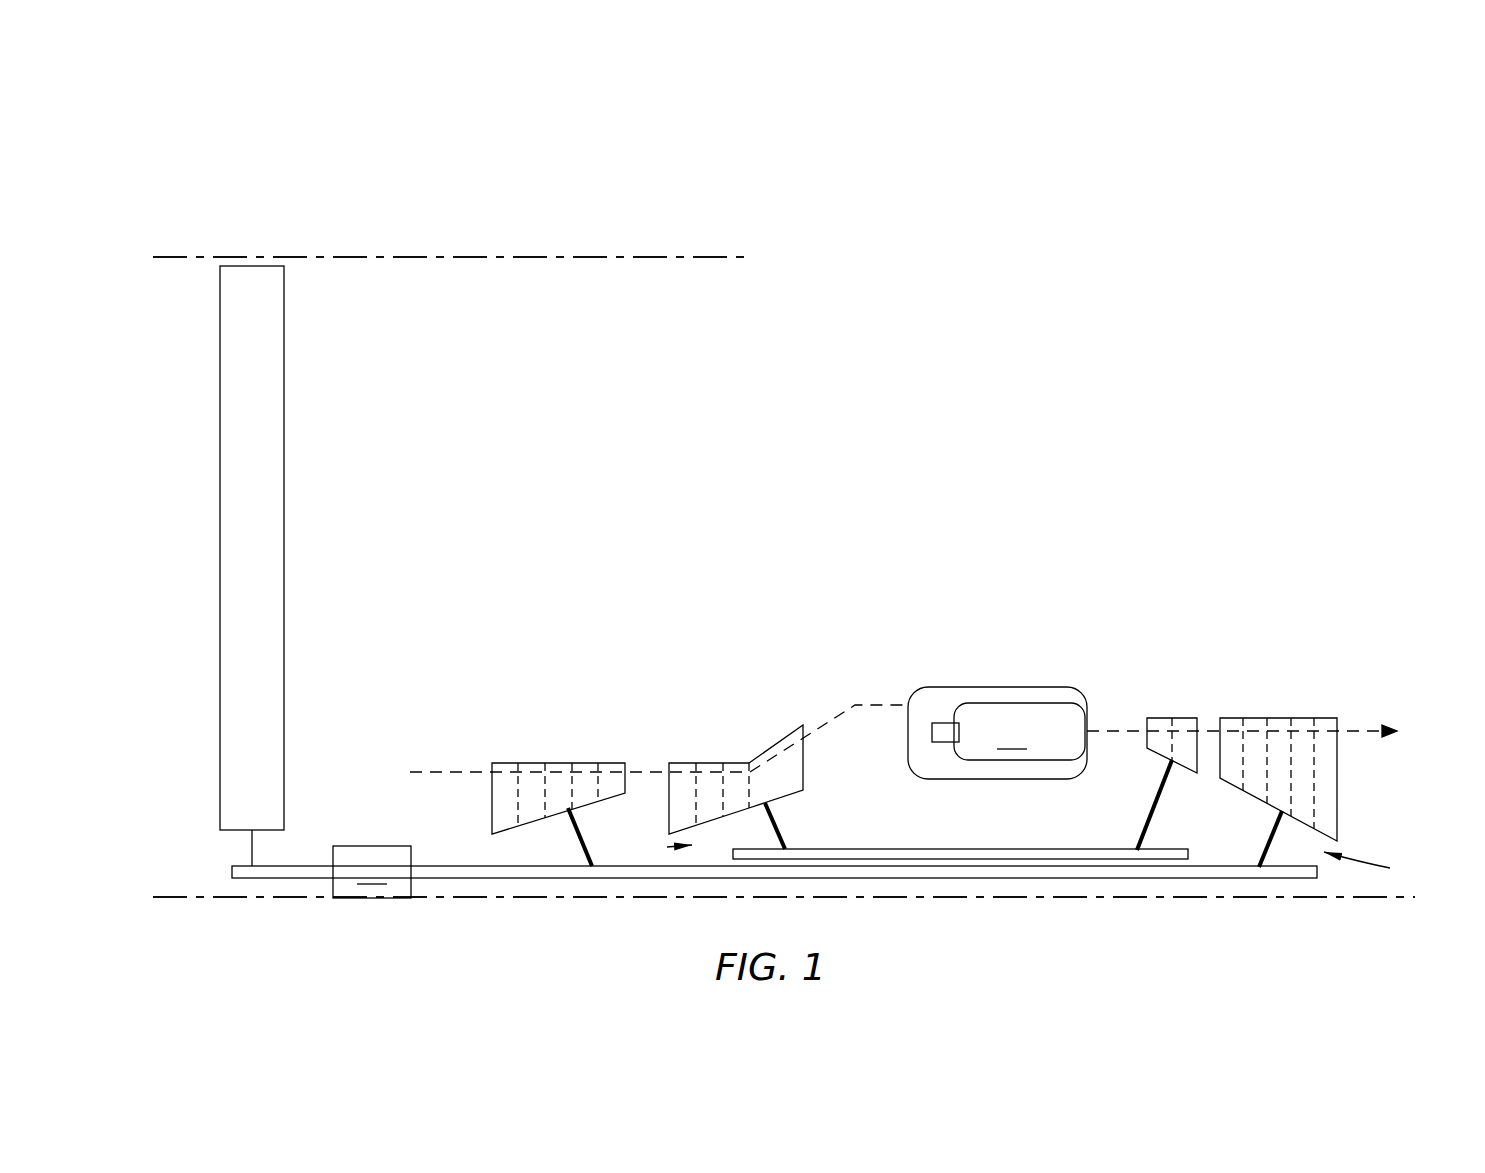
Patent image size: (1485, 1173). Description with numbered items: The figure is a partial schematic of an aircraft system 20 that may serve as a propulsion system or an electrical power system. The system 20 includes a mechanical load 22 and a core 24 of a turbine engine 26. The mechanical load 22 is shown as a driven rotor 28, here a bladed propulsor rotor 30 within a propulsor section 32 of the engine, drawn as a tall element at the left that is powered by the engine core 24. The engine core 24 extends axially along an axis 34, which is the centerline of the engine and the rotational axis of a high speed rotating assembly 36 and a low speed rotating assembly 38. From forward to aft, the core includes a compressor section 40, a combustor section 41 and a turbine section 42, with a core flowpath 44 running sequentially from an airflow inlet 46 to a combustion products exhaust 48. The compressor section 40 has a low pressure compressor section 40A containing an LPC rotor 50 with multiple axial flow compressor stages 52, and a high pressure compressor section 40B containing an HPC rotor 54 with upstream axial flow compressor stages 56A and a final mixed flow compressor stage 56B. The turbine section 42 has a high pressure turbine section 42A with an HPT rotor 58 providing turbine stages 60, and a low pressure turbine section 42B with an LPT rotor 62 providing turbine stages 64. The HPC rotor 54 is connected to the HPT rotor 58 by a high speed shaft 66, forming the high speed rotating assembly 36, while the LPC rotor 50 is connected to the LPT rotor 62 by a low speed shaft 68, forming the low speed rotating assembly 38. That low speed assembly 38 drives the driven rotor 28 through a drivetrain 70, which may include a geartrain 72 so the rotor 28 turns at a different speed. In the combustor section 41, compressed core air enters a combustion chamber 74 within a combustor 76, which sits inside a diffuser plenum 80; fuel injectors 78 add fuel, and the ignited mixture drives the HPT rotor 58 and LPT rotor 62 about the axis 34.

The aircraft system 20 is at (200, 133).
The mechanical load 22 is at (449, 211).
The propulsor section 32 is at (246, 242).
The driven rotor 28 is at (191, 566).
The propulsor rotor 30 is at (220, 430).
The turbine engine 26 is at (994, 345).
The engine core 24 is at (683, 922).
The axis 34 is at (190, 898).
The high speed rotating assembly 36 is at (661, 850).
The low speed rotating assembly 38 is at (1374, 868).
The compressor section 40 is at (790, 502).
The low pressure compressor section 40A is at (632, 555).
The high pressure compressor section 40B is at (797, 555).
The combustor section 41 is at (1087, 502).
The turbine section 42 is at (1342, 502).
The high pressure turbine section 42A is at (1195, 555).
The low pressure turbine section 42B is at (1342, 555).
The core flowpath 44 is at (629, 738).
The airflow inlet 46 is at (448, 772).
The combustion products exhaust 48 is at (1398, 731).
The low pressure compressor rotor 50 is at (578, 832).
The compressor stages 52 is at (608, 763).
The high pressure compressor rotor 54 is at (790, 826).
The axial flow compressor stages 56A is at (732, 763).
The mixed flow compressor stage 56B is at (772, 748).
The high pressure turbine rotor 58 is at (1160, 803).
The turbine stages 60 is at (1180, 718).
The low pressure turbine rotor 62 is at (1272, 835).
The turbine stages 64 is at (1327, 718).
The high speed shaft 66 is at (920, 848).
The low speed shaft 68 is at (932, 878).
The drivetrain 70 is at (370, 831).
The geartrain 72 is at (377, 830).
The combustion chamber 74 is at (1012, 737).
The combustor 76 is at (1030, 698).
The fuel injectors 78 is at (947, 723).
The diffuser plenum 80 is at (921, 760).